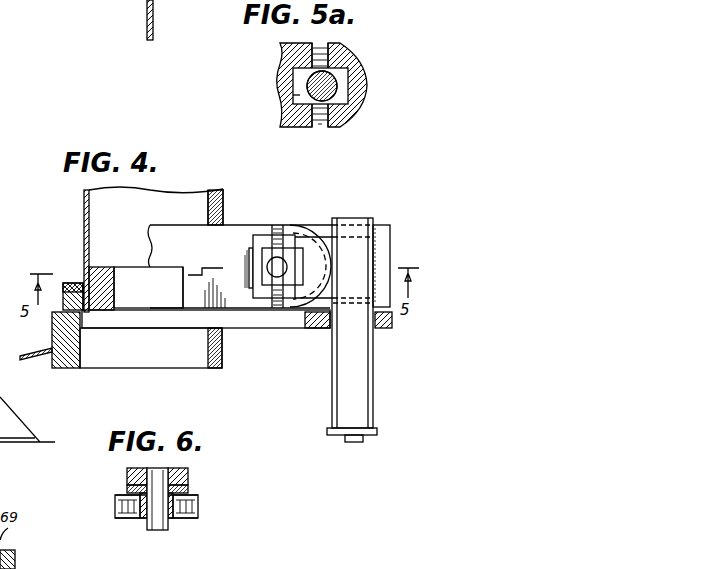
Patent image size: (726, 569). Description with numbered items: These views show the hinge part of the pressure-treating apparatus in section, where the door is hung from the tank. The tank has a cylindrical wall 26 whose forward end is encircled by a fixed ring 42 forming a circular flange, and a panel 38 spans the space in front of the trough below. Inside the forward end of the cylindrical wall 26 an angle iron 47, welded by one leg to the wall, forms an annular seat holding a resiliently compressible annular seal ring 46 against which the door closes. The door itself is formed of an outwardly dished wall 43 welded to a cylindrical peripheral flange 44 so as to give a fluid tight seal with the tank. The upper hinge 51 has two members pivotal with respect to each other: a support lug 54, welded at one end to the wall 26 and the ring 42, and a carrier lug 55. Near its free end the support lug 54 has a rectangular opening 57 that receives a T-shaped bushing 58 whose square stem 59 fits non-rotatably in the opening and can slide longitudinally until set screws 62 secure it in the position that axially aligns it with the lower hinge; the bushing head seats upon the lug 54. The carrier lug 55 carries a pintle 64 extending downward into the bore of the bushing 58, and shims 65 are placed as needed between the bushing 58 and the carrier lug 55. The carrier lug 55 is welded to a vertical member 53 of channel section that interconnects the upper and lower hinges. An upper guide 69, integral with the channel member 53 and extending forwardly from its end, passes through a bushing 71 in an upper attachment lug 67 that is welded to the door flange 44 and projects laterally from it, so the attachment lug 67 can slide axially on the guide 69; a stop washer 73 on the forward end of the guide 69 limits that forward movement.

In FIG. 4, the cylindrical wall 26 is at (84, 214).
In FIG. 5A, the panel 38 is at (147, 10).
In FIG. 4, the fixed ring 42 is at (100, 272).
In FIG. 4, the outwardly dished wall 43 is at (33, 358).
In FIG. 4, the cylindrical peripheral flange 44 is at (68, 352).
In FIG. 4, the annular seal ring 46 is at (68, 283).
In FIG. 4, the angle iron 47 is at (80, 285).
In FIG. 4, the upper hinge 51 is at (305, 222).
In FIG. 4, the vertical member 53 is at (380, 228).
In FIG. 5A, the support lug 54 is at (358, 113).
In FIG. 4, the support lug 54 is at (232, 232).
In FIG. 6, the support lug 54 is at (190, 520).
In FIG. 4, the carrier lug 55 is at (320, 237).
In FIG. 6, the carrier lug 55 is at (188, 478).
In FIG. 5A, the rectangular opening 57 is at (293, 100).
In FIG. 4, the rectangular opening 57 is at (250, 277).
In FIG. 5A, the bushing 58 is at (330, 75).
In FIG. 6, the stem 59 is at (143, 512).
In FIG. 5A, the set screws 62 is at (325, 43).
In FIG. 4, the set screws 62 is at (277, 225).
In FIG. 6, the set screws 62 is at (198, 500).
In FIG. 5A, the pintle 64 is at (325, 88).
In FIG. 4, the pintle 64 is at (277, 267).
In FIG. 6, the pintle 64 is at (151, 506).
In FIG. 6, the shims 65 is at (127, 482).
In FIG. 4, the upper attachment lug 67 is at (270, 320).
In FIG. 4, the upper guide 69 is at (360, 375).
In FIG. 4, the bushing 71 is at (330, 330).
In FIG. 4, the stop washer 73 is at (376, 436).